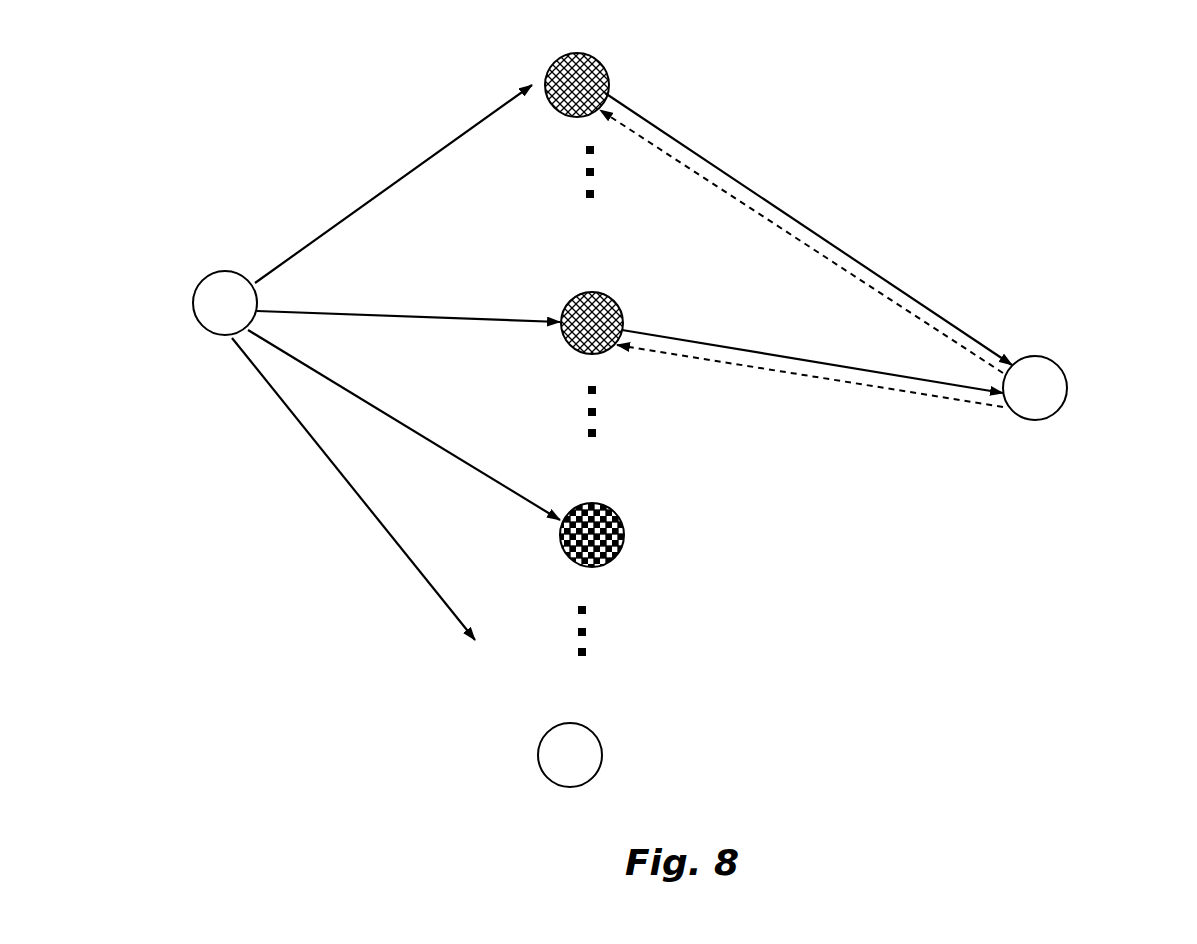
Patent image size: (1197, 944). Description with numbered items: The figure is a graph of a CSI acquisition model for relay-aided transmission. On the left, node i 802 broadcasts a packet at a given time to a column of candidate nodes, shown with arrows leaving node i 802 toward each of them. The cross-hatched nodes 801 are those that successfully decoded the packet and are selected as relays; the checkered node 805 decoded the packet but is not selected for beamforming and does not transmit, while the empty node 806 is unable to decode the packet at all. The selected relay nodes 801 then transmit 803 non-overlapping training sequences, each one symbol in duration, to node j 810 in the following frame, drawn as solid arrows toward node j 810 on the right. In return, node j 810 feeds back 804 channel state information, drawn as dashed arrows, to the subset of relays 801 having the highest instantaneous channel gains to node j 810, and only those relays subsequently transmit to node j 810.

The relay nodes 801 is at (583, 53).
The node i 802 is at (232, 271).
The transmission of training sequences 803 is at (838, 238).
The CSI feedback 804 is at (722, 182).
The non-selected node 805 is at (622, 530).
The node unable to decode 806 is at (590, 725).
The node j 810 is at (1038, 357).